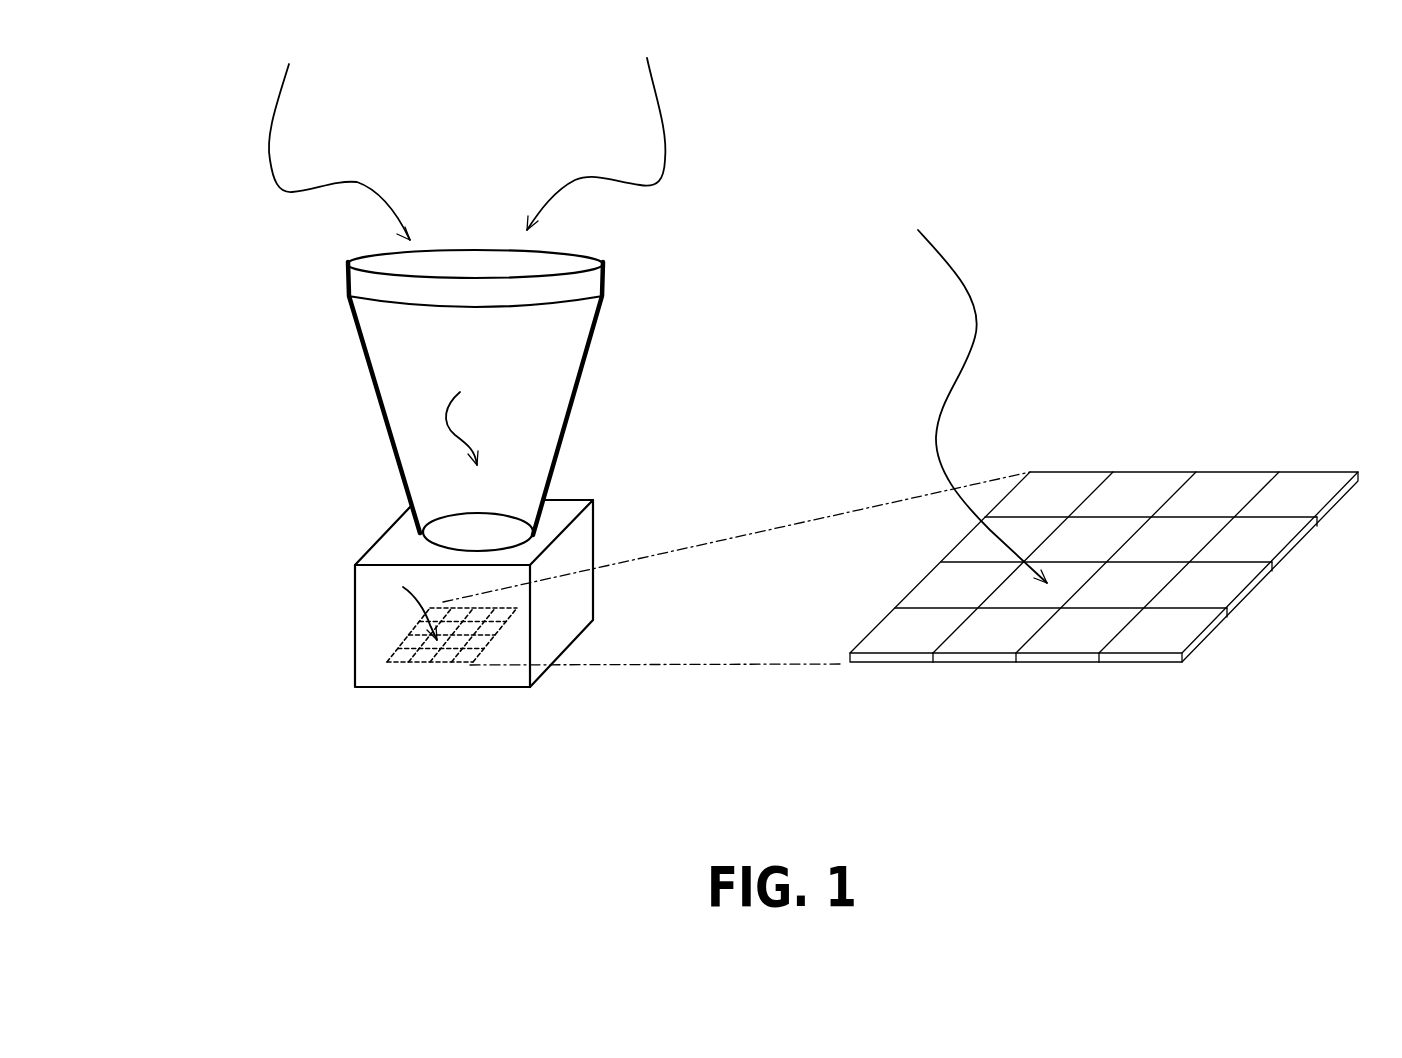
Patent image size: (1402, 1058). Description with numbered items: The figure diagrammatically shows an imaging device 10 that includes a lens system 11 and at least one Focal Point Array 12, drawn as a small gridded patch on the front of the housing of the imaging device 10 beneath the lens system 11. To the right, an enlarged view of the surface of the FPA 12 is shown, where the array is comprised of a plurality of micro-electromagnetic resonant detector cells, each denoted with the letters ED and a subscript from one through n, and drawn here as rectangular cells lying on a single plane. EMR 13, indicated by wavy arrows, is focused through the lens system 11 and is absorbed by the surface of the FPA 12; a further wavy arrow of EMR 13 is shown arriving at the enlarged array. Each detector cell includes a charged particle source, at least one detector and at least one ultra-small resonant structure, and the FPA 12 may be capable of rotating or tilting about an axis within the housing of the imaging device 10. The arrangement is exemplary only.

The imaging device 10 is at (337, 637).
The lens system 11 is at (337, 337).
The focal point array 12 is at (960, 692).
The EMR 13 is at (555, 130).